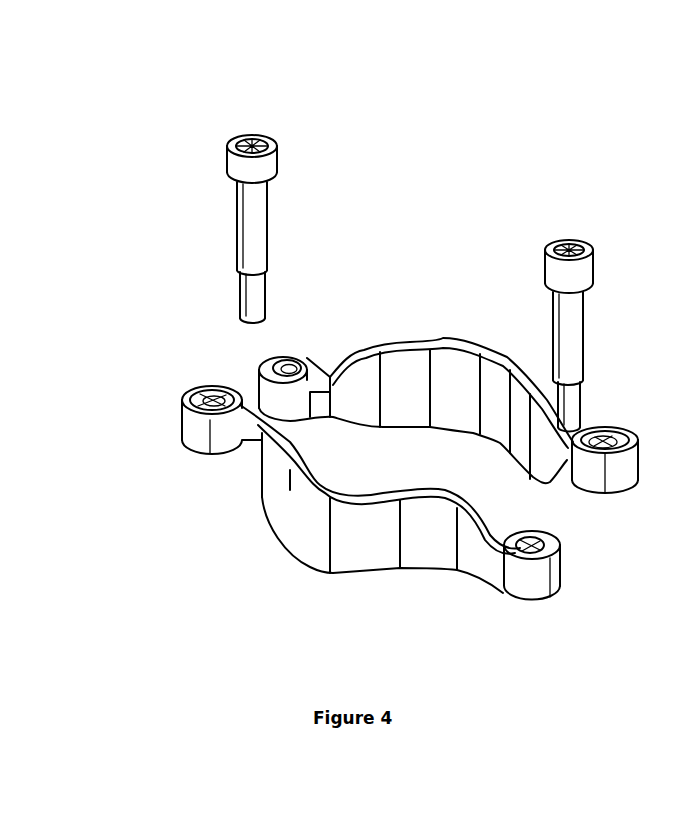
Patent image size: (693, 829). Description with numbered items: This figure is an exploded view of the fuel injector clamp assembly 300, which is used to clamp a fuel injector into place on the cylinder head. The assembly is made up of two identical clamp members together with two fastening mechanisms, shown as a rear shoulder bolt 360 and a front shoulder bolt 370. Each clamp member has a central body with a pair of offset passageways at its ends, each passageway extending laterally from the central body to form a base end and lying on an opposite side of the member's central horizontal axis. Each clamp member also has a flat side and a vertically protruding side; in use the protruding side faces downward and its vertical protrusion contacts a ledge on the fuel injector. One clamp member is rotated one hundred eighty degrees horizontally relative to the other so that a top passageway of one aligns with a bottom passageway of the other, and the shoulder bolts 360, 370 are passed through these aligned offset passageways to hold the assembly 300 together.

The fuel injector clamp assembly 300 is at (530, 133).
The rear shoulder bolt 360 is at (277, 137).
The front shoulder bolt 370 is at (594, 262).